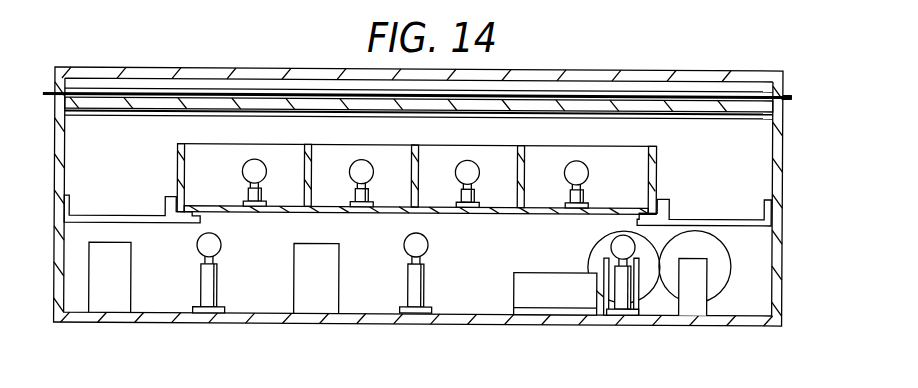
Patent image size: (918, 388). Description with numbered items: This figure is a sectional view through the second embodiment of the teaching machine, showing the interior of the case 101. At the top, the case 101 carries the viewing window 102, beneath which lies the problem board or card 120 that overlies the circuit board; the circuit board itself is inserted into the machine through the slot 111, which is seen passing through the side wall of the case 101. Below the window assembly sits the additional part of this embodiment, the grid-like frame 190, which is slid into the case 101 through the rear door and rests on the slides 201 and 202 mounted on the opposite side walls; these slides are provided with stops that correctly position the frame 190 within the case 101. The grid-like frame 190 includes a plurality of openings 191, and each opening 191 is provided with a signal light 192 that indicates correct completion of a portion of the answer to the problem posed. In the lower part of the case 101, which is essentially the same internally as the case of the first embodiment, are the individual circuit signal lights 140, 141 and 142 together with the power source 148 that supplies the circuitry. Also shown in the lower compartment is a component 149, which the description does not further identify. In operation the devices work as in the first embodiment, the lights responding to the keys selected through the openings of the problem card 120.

The case 101 is at (282, 316).
The viewing window 102 is at (300, 41).
The slot 111 is at (789, 97).
The problem board or card 120 is at (675, 95).
The circuit signal light 140 is at (222, 246).
The circuit signal light 141 is at (407, 250).
The circuit signal light 142 is at (617, 240).
The power source 148 is at (727, 290).
The box 149 is at (533, 280).
The grid-like frame 190 is at (378, 165).
The openings 191 is at (285, 156).
The signal light 192 is at (362, 157).
The slide 201 is at (166, 198).
The slide 202 is at (673, 204).